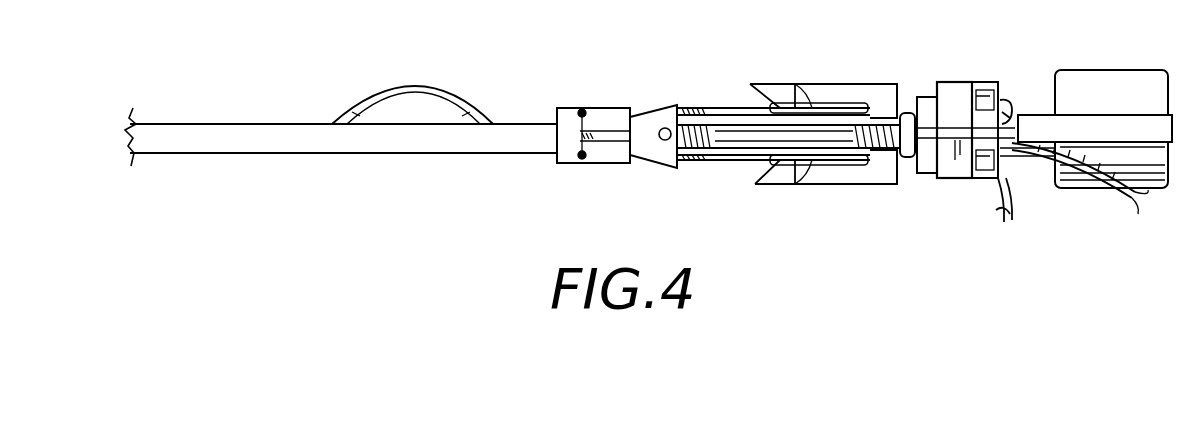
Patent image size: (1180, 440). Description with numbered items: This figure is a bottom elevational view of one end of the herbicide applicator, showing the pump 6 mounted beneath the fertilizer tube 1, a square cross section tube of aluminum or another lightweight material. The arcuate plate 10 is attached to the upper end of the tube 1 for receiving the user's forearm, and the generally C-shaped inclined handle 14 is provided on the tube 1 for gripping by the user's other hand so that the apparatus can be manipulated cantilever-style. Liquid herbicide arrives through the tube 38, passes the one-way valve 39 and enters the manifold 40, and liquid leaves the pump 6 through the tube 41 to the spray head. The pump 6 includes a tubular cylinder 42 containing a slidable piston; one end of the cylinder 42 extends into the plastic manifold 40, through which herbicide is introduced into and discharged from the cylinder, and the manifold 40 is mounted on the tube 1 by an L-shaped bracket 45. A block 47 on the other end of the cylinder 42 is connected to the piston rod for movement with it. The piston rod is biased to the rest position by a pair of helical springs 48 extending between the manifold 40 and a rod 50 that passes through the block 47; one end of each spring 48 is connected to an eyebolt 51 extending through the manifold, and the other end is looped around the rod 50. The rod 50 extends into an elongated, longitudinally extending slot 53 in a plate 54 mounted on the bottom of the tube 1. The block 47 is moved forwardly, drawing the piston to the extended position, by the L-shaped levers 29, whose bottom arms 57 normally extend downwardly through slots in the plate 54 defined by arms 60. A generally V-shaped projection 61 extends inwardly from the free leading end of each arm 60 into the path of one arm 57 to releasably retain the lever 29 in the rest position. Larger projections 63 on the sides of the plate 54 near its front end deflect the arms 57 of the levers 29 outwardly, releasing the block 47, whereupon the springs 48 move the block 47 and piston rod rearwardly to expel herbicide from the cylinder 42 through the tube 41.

The fertilizer tube 1 is at (168, 153).
The pump 6 is at (849, 82).
The arcuate plate 10 is at (1103, 92).
The inclined handle 14 is at (388, 92).
The L-shaped levers 29 is at (699, 108).
The tube 38 is at (1132, 202).
The one-way valve 39 is at (985, 183).
The manifold 40 is at (950, 82).
The tube 41 is at (1010, 214).
The tubular cylinder 42 is at (748, 125).
The L-shaped bracket 45 is at (985, 85).
The block 47 is at (660, 106).
The helical springs 48 is at (737, 165).
The rod 50 is at (666, 145).
The eyebolt 51 is at (1004, 96).
The slot 53 is at (580, 160).
The plate 54 is at (578, 112).
The bottom arms 57 is at (803, 84).
The arms 60 is at (847, 84).
The V-shaped projection 61 is at (785, 88).
The projections 63 is at (640, 108).